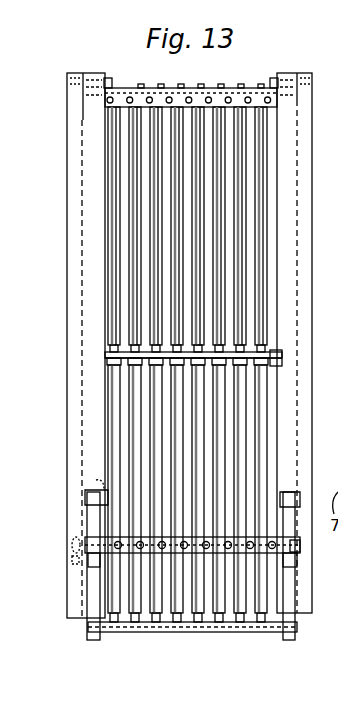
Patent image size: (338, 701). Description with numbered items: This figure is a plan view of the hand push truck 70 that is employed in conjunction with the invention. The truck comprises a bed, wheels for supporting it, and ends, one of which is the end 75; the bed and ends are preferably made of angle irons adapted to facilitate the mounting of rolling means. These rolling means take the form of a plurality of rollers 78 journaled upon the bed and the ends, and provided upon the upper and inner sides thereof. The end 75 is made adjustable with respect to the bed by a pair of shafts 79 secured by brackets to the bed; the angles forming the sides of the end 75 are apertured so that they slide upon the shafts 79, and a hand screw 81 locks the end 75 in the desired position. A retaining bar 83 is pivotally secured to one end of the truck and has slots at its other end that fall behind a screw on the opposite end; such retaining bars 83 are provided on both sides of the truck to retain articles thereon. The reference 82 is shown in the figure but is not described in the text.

The hand push truck 70 is at (67, 544).
The end 75 is at (88, 566).
The rollers 78 is at (108, 440).
The shafts 79 is at (337, 356).
The hand screw 81 is at (330, 395).
The right pillar 82 is at (306, 171).
The retaining bar 83 is at (69, 250).